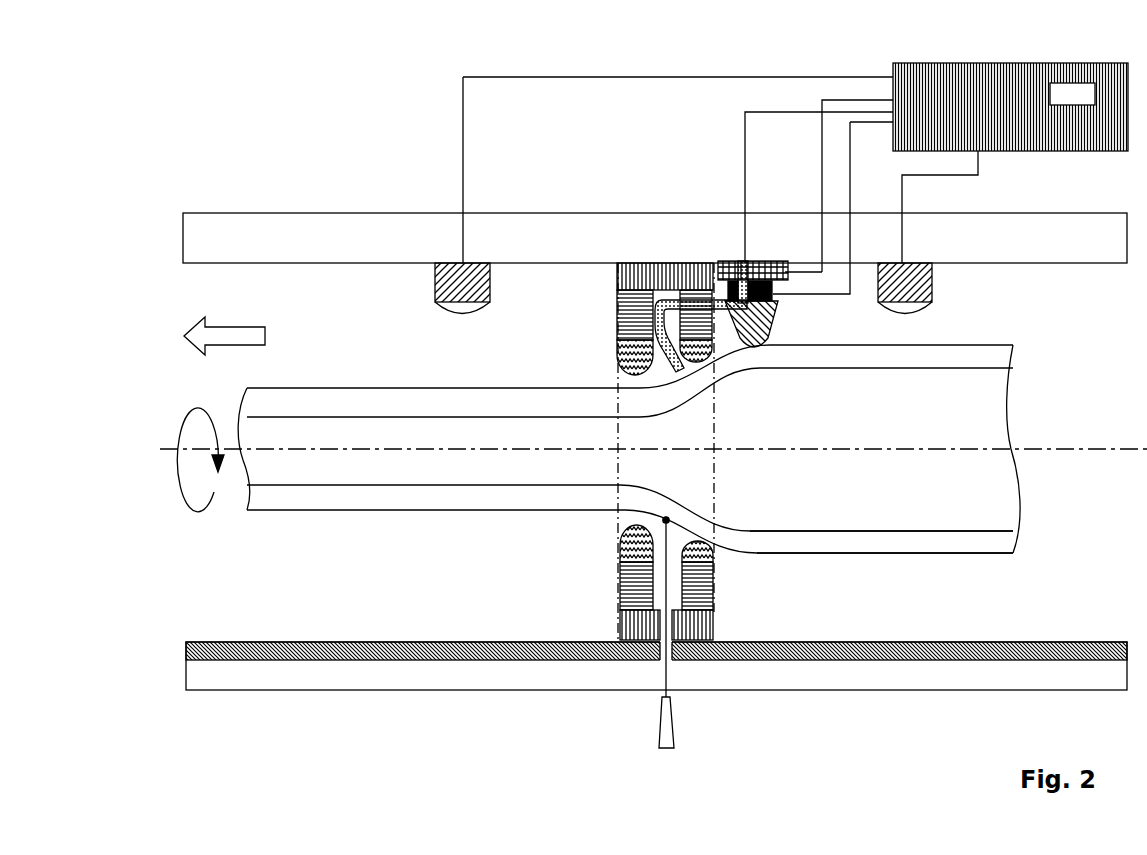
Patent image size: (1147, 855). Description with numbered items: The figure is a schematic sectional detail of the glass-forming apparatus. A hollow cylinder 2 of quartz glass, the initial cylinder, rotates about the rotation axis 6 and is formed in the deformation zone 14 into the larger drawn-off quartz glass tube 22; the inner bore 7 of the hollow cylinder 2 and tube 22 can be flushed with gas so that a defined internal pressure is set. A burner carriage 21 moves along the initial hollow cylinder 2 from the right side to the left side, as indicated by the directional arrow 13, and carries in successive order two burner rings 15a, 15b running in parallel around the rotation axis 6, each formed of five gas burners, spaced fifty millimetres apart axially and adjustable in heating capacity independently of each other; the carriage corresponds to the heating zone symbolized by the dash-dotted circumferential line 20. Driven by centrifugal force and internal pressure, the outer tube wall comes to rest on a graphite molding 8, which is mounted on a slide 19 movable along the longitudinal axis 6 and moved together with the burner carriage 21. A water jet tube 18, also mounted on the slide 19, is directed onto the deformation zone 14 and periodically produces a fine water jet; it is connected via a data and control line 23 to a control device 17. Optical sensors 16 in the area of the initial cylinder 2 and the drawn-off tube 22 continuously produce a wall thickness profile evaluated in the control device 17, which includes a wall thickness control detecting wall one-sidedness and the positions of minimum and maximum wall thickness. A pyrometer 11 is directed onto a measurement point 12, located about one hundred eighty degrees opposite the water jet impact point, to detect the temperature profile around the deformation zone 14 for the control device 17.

The hollow cylinder 2 is at (300, 498).
The rotation axis 6 is at (1110, 450).
The inner bore 7 is at (830, 408).
The graphite molding 8 is at (781, 322).
The pyrometer 11 is at (660, 722).
The measurement point 12 is at (672, 518).
The directional arrow 13 is at (214, 332).
The deformation zone 14 is at (655, 441).
The burner ring 15a is at (623, 587).
The burner ring 15b is at (700, 583).
The optical sensors 16 is at (478, 280).
The control device 17 is at (1060, 128).
The water jet tube 18 is at (668, 293).
The slide 19 is at (773, 261).
The circumferential line 20 is at (617, 433).
The burner carriage 21 is at (695, 623).
The tube 22 is at (918, 542).
The data and control line 23 is at (745, 163).